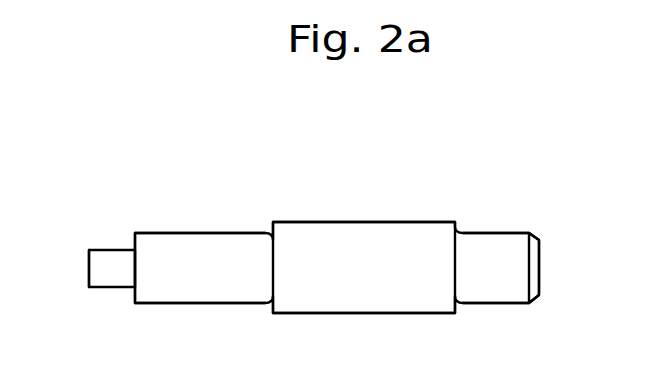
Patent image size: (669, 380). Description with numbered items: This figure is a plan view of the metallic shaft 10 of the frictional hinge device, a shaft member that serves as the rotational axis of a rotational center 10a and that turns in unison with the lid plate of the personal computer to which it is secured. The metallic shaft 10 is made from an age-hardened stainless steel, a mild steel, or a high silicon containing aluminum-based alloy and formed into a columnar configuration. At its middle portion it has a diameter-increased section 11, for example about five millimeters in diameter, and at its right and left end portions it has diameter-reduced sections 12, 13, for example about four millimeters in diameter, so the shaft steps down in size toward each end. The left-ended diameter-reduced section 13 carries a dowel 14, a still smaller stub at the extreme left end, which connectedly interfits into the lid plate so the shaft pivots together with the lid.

The metallic shaft 10 is at (287, 197).
The rotational center 10a is at (88, 265).
The diameter-increased section 11 is at (397, 231).
The diameter-reduced section 12 is at (491, 243).
The diameter-reduced section 13 is at (183, 242).
The dowel 14 is at (110, 258).